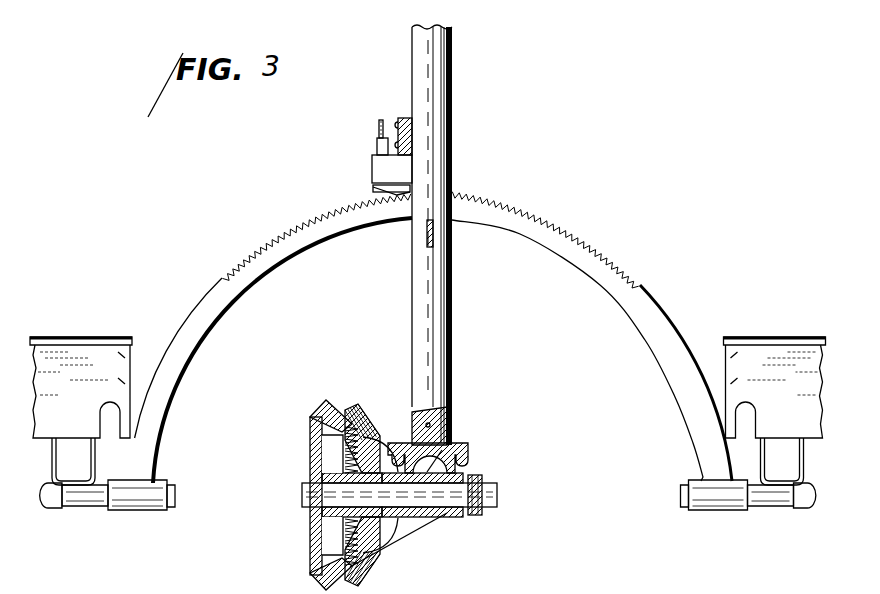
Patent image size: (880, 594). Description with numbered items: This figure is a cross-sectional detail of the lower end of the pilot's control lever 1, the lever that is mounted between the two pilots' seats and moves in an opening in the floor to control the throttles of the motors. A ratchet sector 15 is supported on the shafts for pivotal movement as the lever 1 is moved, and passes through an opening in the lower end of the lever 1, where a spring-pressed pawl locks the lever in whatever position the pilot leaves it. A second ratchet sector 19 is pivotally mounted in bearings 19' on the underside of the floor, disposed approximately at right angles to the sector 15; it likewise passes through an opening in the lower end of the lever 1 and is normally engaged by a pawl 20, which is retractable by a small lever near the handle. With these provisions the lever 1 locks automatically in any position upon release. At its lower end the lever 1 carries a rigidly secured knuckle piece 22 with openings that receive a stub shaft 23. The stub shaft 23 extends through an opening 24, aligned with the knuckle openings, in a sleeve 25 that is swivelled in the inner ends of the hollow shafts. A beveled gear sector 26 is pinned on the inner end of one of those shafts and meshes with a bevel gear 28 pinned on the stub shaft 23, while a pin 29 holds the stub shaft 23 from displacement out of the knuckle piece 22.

The pilot's control lever 1 is at (442, 65).
The ratchet sector 15 is at (434, 238).
The ratchet sector 19 is at (273, 338).
The bearings 19' is at (607, 336).
The pawl 20 is at (375, 193).
The knuckle piece 22 is at (490, 450).
The stub shaft 23 is at (463, 488).
The opening 24 is at (422, 512).
The sleeve 25 is at (430, 424).
The beveled gear sector 26 is at (365, 416).
The bevel gear 28 is at (323, 400).
The pin 29 is at (486, 518).